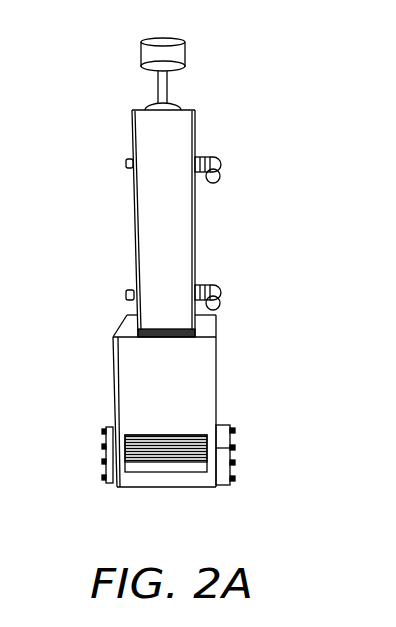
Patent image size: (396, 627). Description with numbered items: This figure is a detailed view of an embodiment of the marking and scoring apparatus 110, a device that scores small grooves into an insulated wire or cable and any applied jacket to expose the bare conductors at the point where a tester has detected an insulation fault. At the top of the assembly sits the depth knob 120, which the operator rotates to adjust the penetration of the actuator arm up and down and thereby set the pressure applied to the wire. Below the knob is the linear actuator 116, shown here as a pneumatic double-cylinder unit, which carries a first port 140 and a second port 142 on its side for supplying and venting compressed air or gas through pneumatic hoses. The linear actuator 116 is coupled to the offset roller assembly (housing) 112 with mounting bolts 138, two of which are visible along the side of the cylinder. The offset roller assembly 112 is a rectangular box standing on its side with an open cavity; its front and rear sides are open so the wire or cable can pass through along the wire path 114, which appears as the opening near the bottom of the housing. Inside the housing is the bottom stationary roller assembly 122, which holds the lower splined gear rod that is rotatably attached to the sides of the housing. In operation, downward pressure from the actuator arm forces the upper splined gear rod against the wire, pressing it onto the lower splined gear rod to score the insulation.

The marking and scoring apparatus 110 is at (264, 76).
The offset roller assembly (housing) 112 is at (134, 363).
The wire path 114 is at (137, 465).
The linear actuator 116 is at (159, 227).
The depth knob 120 is at (139, 49).
The bottom stationary roller assembly 122 is at (231, 441).
The mounting bolts 138 is at (125, 163).
The first port 140 is at (226, 165).
The second port 142 is at (226, 292).